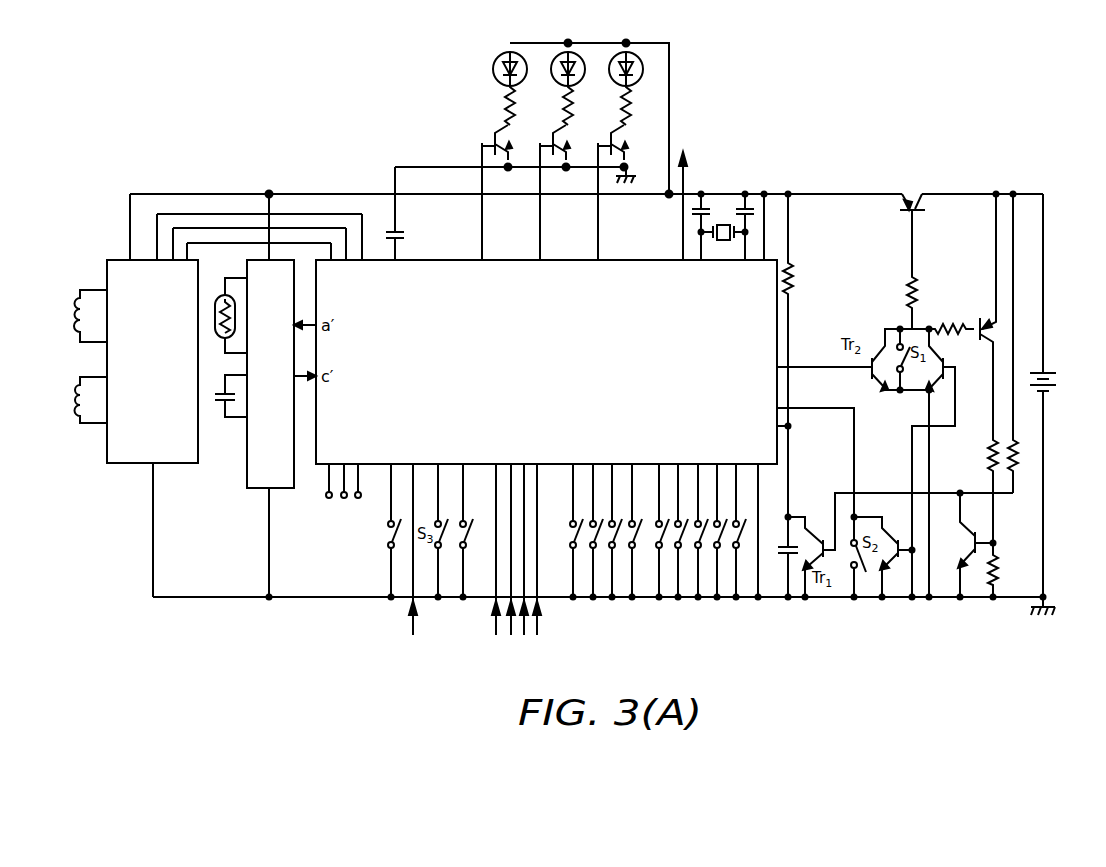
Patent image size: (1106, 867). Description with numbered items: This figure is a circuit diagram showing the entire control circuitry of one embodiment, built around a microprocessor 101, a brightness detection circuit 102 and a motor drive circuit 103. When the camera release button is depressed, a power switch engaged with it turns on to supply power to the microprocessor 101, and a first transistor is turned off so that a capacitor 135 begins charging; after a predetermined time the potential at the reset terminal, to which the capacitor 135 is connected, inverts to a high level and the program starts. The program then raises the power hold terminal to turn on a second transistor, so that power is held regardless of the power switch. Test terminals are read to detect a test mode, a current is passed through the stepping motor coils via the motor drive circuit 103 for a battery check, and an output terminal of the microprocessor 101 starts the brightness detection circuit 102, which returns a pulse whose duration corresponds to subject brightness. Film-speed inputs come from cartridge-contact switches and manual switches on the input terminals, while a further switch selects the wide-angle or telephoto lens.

The microprocessor 101 is at (605, 260).
The brightness detection circuit 102 is at (246, 472).
The motor drive circuit 103 is at (105, 458).
The capacitor 135 is at (772, 548).